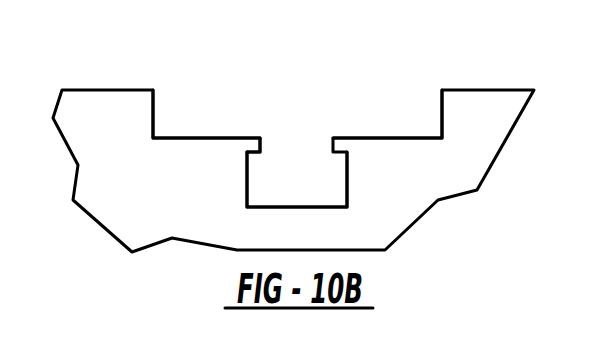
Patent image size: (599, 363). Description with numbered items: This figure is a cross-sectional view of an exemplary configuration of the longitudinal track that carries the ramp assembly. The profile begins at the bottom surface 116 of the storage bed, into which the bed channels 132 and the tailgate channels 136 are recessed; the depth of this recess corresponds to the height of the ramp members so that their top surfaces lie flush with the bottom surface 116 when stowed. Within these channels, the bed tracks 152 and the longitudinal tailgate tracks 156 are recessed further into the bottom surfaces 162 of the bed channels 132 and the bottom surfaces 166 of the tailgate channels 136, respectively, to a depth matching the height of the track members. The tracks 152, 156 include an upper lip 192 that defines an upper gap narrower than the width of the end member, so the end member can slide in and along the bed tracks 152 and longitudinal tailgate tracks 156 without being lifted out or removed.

The bottom surface 116 is at (115, 90).
The bed channels 132 is at (206, 92).
The tailgate channels 136 is at (153, 107).
The upper lip 192 is at (262, 146).
The bed tracks 152 is at (317, 145).
The longitudinal tailgate tracks 156 is at (298, 207).
The bottom surfaces of the bed channels 162 is at (430, 78).
The bottom surfaces of the tailgate channels 166 is at (407, 138).